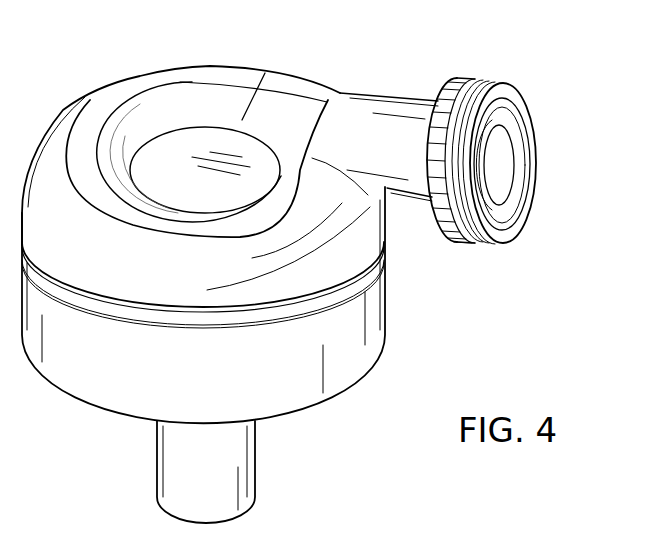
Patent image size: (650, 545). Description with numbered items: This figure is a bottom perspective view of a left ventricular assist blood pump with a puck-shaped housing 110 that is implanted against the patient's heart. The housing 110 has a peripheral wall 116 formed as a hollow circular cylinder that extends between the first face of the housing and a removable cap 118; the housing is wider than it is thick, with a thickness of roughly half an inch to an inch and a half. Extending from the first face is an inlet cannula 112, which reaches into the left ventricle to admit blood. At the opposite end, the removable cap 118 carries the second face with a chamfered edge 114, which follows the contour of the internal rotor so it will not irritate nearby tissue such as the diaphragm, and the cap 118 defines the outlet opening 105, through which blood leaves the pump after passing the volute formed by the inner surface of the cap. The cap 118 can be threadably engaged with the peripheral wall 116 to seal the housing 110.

The outlet opening 105 is at (505, 171).
The puck-shaped housing 110 is at (325, 272).
The inlet cannula 112 is at (227, 477).
The chamfered edge 114 is at (323, 240).
The peripheral wall 116 is at (338, 333).
The removable cap 118 is at (176, 158).